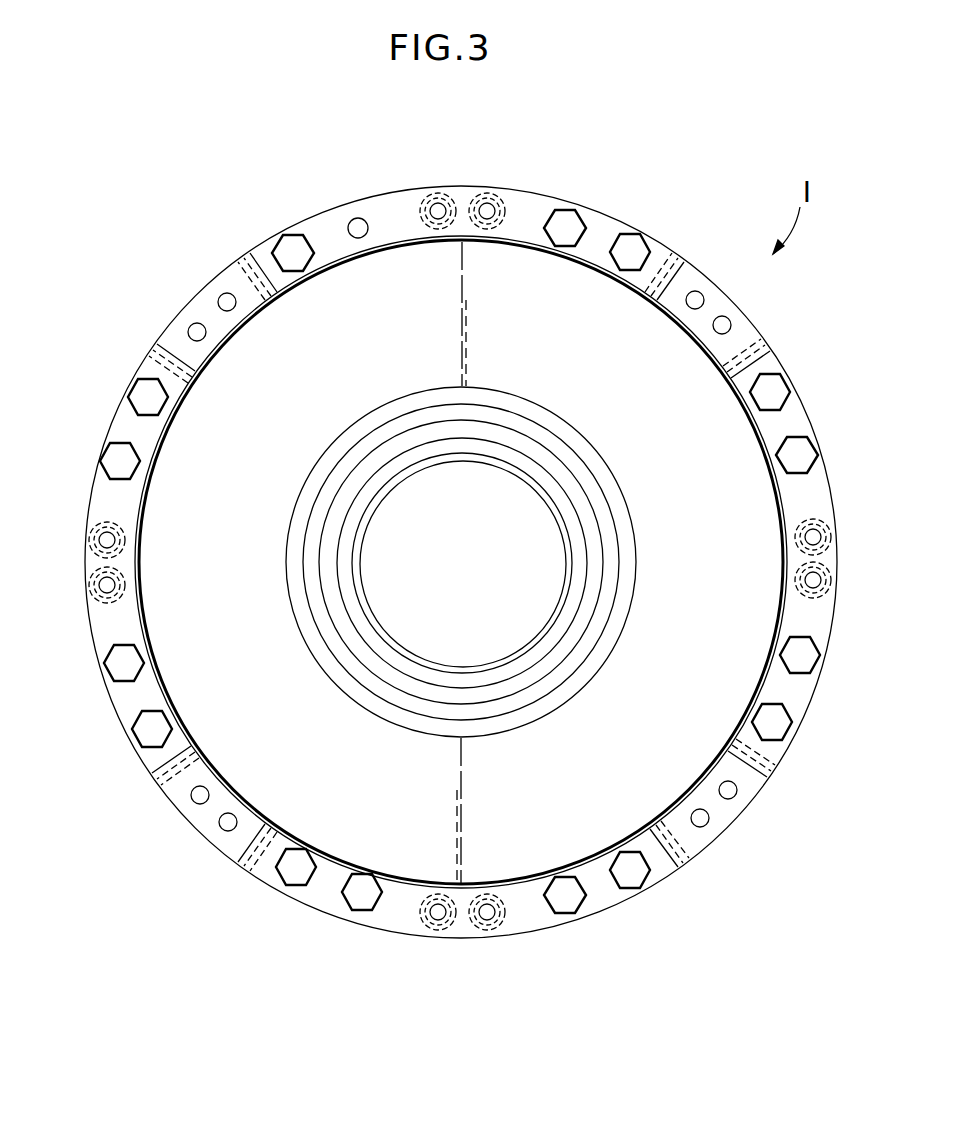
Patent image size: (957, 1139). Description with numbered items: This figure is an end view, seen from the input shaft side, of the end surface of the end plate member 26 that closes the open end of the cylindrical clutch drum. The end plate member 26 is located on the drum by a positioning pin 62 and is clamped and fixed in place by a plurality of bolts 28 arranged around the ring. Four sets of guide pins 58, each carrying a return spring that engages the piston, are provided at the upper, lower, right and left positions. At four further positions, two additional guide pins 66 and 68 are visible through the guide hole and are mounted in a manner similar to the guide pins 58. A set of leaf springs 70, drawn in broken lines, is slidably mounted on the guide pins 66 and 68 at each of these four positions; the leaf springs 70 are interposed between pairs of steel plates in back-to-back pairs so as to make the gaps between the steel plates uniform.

The end plate member 26 is at (318, 230).
The bolts 28 is at (565, 225).
The guide pins 58 is at (436, 203).
The positioning pin 62 is at (353, 219).
The guide pin 66 is at (223, 294).
The guide pin 68 is at (190, 326).
The leaf springs 70 is at (170, 348).